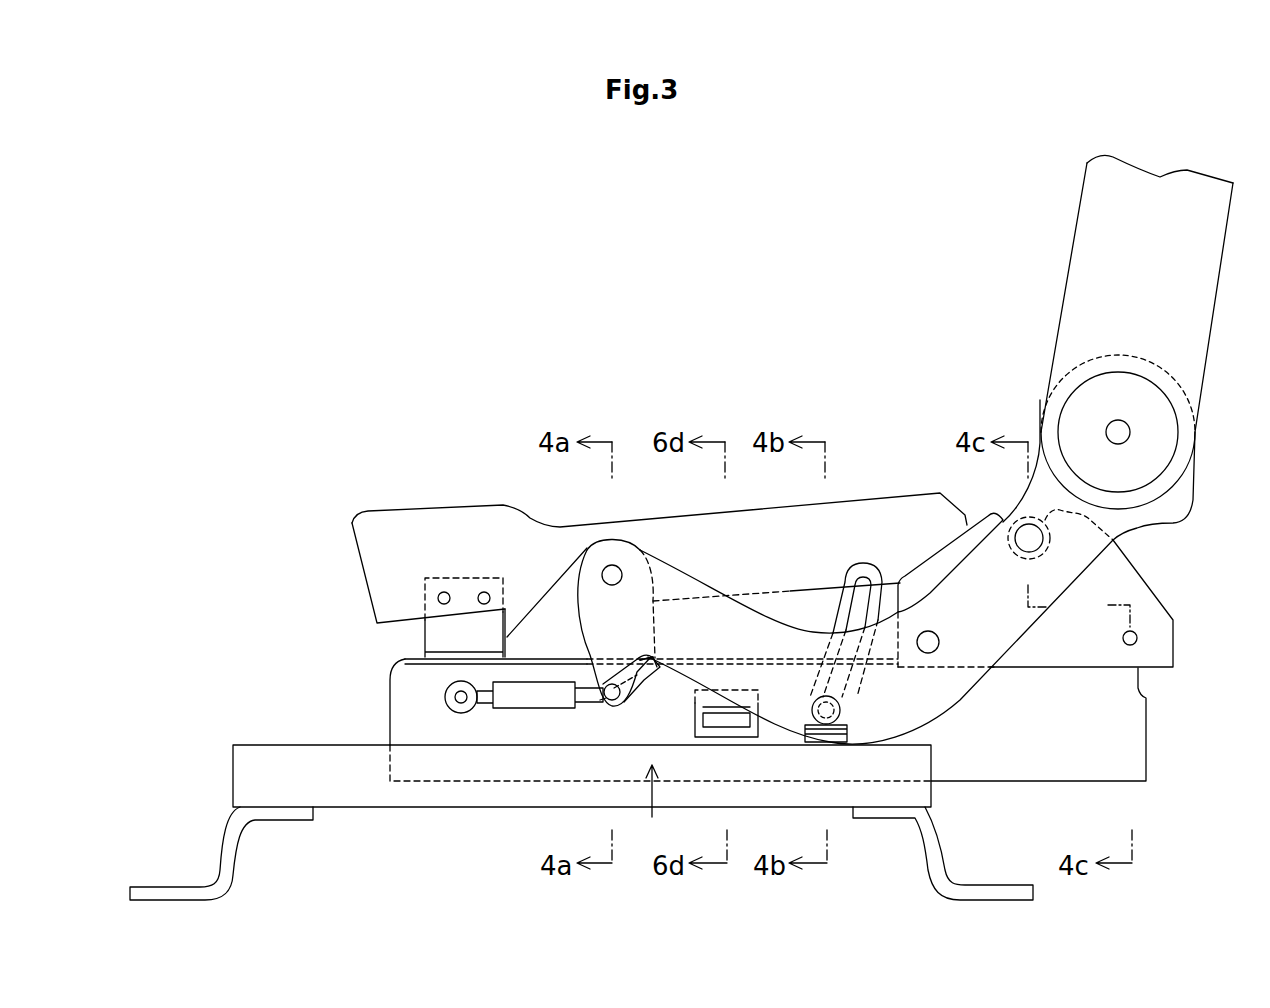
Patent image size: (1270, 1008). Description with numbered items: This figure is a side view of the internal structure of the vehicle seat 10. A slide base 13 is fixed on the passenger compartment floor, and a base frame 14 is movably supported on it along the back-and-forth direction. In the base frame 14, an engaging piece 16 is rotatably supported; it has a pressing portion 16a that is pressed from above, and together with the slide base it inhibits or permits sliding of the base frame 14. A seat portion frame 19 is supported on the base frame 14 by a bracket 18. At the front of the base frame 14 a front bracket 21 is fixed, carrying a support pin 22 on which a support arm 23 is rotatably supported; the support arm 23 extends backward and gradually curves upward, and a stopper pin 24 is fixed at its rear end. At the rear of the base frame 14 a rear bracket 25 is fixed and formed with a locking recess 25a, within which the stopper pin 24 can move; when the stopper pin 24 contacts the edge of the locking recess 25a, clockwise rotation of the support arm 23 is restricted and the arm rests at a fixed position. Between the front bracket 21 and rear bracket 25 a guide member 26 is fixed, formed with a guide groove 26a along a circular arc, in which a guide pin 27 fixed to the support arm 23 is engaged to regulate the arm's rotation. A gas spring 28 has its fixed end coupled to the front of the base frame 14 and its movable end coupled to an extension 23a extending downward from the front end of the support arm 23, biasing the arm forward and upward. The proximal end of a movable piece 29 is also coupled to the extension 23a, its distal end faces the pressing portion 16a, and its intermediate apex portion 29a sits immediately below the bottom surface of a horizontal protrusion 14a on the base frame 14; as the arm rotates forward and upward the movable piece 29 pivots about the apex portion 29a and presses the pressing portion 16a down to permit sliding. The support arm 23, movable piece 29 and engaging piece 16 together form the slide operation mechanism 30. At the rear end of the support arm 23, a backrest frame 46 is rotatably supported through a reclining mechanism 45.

The seat 10 is at (536, 281).
The slide base 13 is at (233, 761).
The base frame 14 is at (388, 690).
The protrusion 14a is at (717, 657).
The engaging piece 16 is at (773, 737).
The pressing portion 16a is at (723, 716).
The bracket 18 is at (425, 637).
The seat portion frame 19 is at (352, 551).
The front bracket 21 is at (547, 589).
The support pin 22 is at (601, 571).
The support arm 23 is at (944, 700).
The extension 23a is at (609, 702).
The stopper pin 24 is at (1016, 526).
The rear bracket 25 is at (1152, 579).
The locking recess 25a is at (1092, 523).
The guide member 26 is at (866, 562).
The guide groove 26a is at (848, 609).
The guide pin 27 is at (814, 698).
The gas spring 28 is at (517, 708).
The movable piece 29 is at (672, 698).
The apex portion 29a is at (650, 668).
The slide operation mechanism 30 is at (649, 808).
The reclining mechanism 45 is at (1185, 410).
The backrest frame 46 is at (1078, 244).